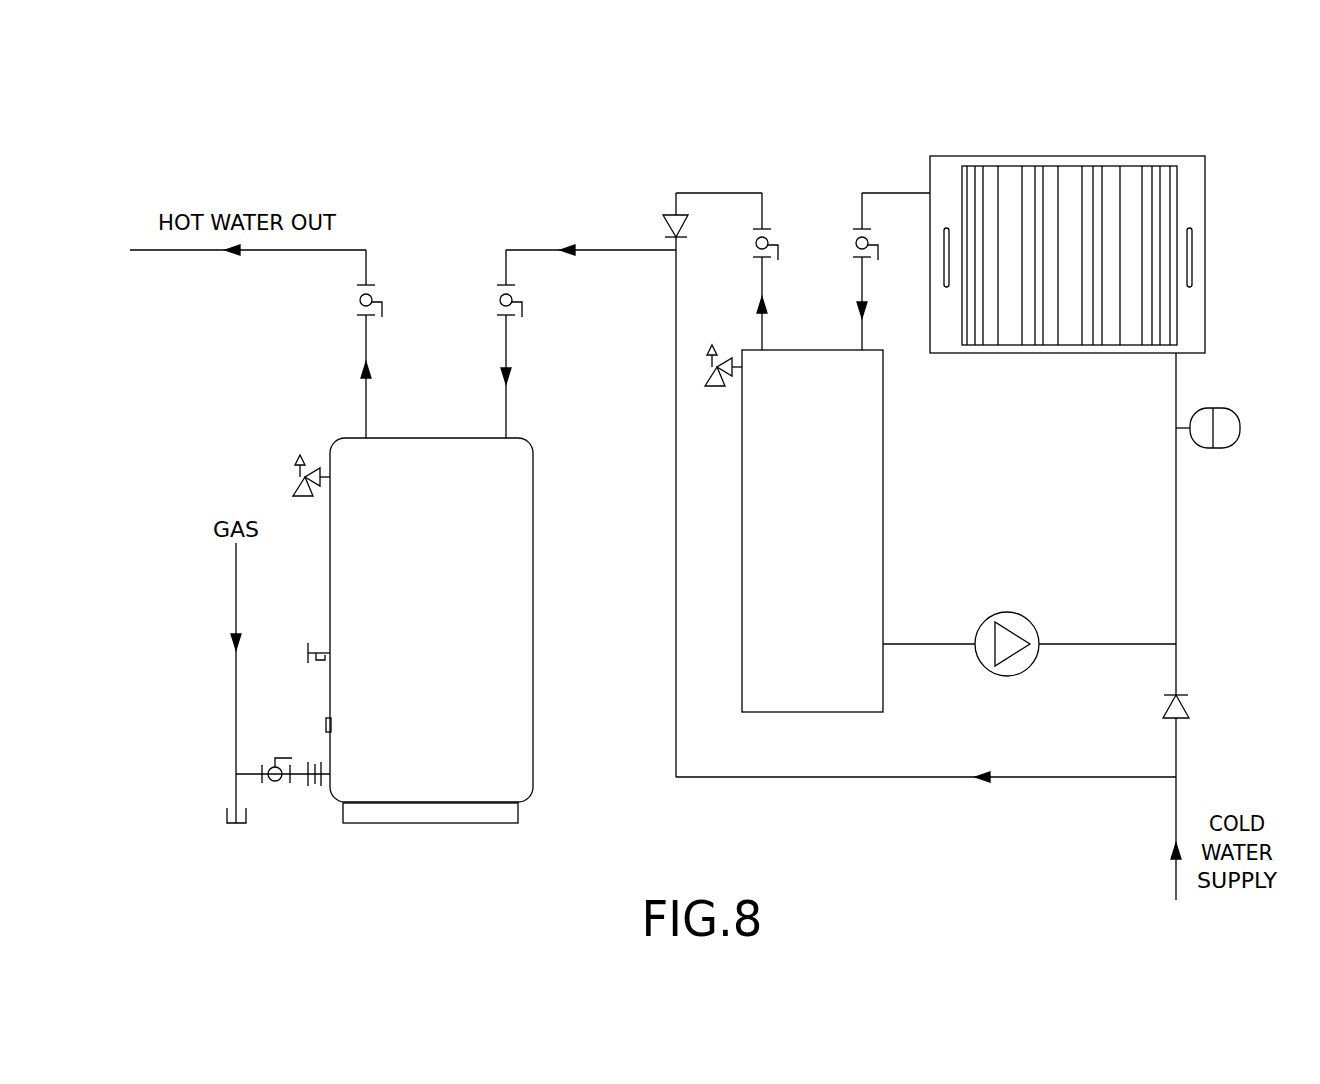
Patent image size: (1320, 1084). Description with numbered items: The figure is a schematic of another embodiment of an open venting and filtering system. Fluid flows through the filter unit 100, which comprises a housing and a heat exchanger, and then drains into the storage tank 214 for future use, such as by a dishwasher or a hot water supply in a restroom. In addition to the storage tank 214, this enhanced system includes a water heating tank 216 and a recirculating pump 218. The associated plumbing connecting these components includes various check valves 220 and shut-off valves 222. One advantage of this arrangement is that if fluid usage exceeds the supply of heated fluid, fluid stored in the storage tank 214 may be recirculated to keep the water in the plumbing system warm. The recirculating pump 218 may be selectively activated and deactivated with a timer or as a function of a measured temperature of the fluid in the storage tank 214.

The filter unit 100 is at (1075, 122).
The storage tank 214 is at (883, 549).
The water heating tank 216 is at (533, 636).
The recirculating pump 218 is at (1030, 620).
The check valves 220 is at (663, 222).
The shut-off valves 222 is at (372, 294).